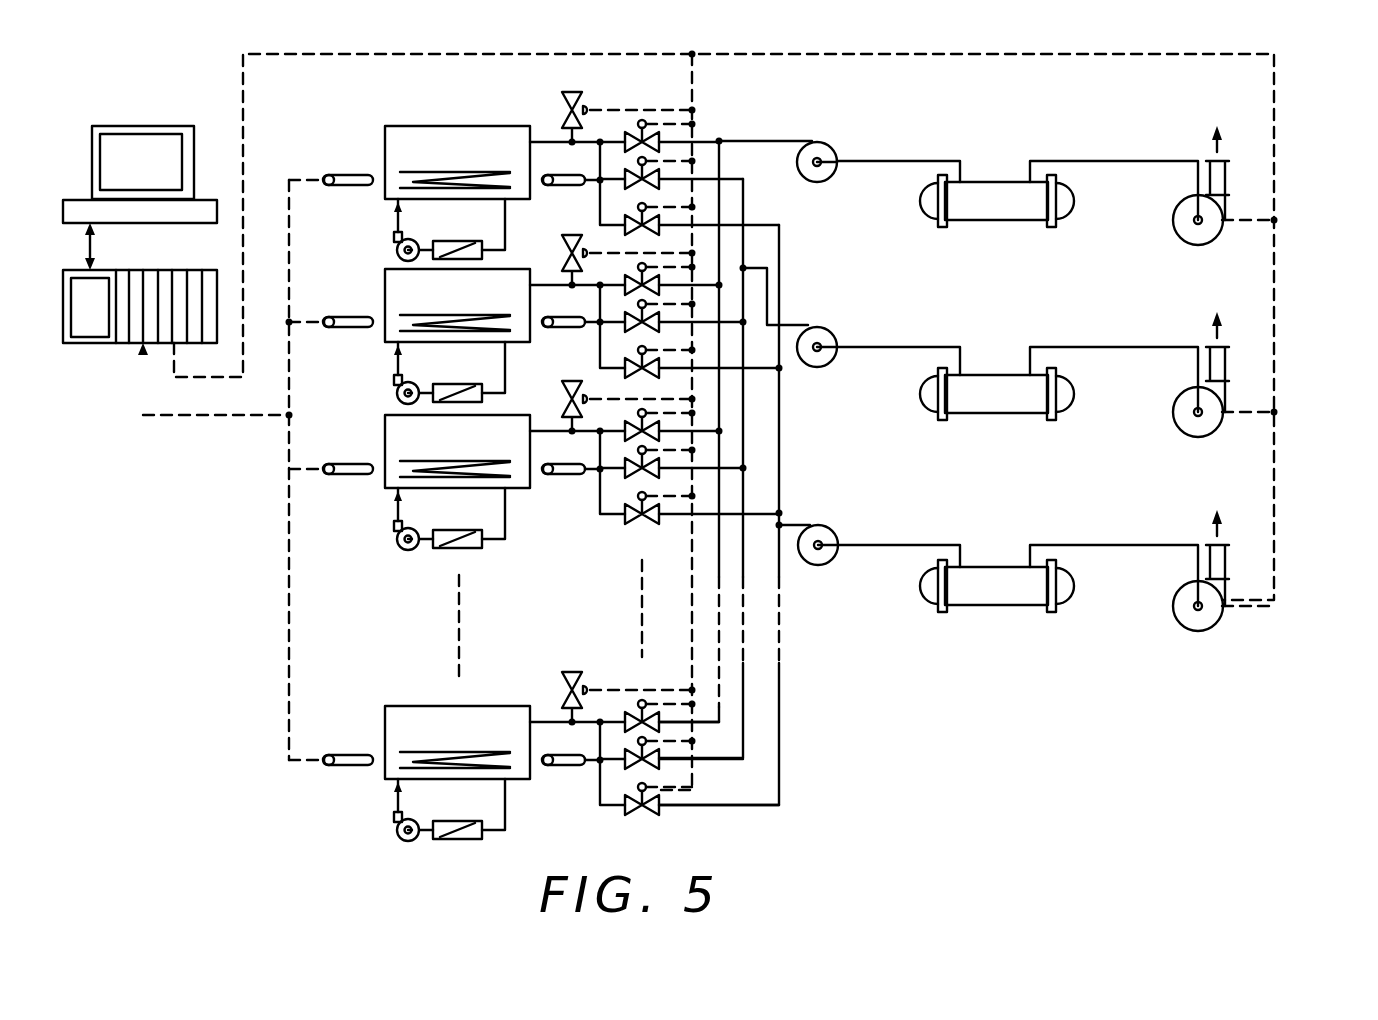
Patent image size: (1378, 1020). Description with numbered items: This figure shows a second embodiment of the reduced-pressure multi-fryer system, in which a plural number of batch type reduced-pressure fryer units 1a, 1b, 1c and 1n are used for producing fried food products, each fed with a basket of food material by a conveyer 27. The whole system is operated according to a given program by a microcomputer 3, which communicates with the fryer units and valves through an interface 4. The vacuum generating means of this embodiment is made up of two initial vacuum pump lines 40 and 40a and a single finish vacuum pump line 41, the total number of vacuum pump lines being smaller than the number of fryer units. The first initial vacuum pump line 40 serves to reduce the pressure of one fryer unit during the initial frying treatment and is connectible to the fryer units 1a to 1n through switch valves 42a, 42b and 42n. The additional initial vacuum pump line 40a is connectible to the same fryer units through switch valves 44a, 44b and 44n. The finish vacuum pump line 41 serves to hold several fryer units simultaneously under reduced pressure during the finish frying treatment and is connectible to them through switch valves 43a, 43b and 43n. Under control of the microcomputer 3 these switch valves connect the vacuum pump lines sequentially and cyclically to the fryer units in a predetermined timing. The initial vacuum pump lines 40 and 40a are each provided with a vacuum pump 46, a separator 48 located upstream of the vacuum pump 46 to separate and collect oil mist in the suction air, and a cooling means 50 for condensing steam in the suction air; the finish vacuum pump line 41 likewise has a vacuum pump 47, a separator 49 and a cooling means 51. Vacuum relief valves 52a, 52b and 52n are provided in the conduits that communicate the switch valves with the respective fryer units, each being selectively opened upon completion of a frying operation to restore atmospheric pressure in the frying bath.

The microcomputer 3 is at (137, 140).
The interface 4 is at (105, 341).
The conveyer 27 is at (338, 173).
The batch type reduced-pressure fryer unit 1a is at (376, 138).
The batch type reduced-pressure fryer unit 1b is at (376, 282).
The batch type reduced-pressure fryer unit 1c is at (376, 428).
The batch type reduced-pressure fryer unit 1n is at (376, 738).
The vacuum relief valve 52a is at (562, 96).
The vacuum relief valve 52b is at (566, 242).
The vacuum relief valve 52n is at (568, 672).
The switch valve 42a is at (641, 120).
The switch valve 42b is at (647, 269).
The switch valve 42n is at (641, 700).
The switch valve 44a is at (647, 162).
The switch valve 44b is at (647, 306).
The switch valve 44n is at (640, 745).
The switch valve 43a is at (647, 208).
The switch valve 43b is at (637, 349).
The switch valve 43n is at (638, 814).
The cooling means 50 is at (845, 146).
The cooling means 51 is at (826, 563).
The separator 48 is at (1003, 222).
The separator 49 is at (1000, 607).
The vacuum pump 46 is at (1176, 228).
The vacuum pump 47 is at (1176, 614).
The initial vacuum pump line 40 is at (1289, 170).
The initial vacuum pump line 40a is at (1290, 337).
The finish vacuum pump line 41 is at (1290, 512).